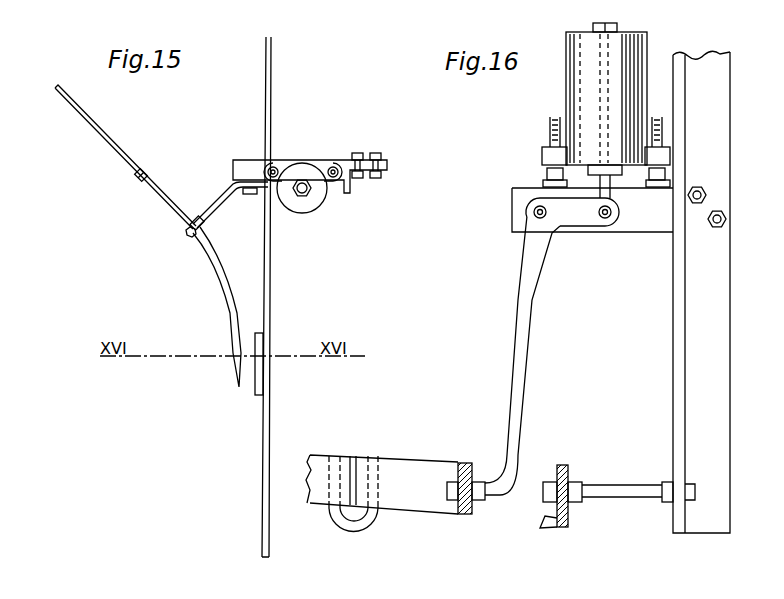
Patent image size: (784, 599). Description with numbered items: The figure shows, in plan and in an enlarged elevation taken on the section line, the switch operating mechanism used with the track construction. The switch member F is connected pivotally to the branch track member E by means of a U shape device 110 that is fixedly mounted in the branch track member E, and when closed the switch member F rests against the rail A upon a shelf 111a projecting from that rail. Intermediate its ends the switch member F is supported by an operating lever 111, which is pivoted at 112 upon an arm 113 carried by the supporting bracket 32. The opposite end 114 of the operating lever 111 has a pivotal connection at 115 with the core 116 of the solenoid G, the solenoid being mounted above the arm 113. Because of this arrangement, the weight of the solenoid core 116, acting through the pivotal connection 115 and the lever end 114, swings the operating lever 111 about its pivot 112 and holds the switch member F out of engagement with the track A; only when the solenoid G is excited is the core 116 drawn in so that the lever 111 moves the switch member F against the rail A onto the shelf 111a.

In FIG. 15, the rail A is at (267, 267).
In FIG. 16, the rail A is at (567, 513).
In FIG. 15, the branch track member E is at (97, 133).
In FIG. 16, the branch track member E is at (320, 462).
In FIG. 15, the switch member F is at (230, 291).
In FIG. 16, the switch member F is at (423, 470).
In FIG. 15, the solenoid G is at (311, 200).
In FIG. 16, the solenoid G is at (582, 85).
In FIG. 15, the supporting bracket 32 is at (364, 181).
In FIG. 16, the supporting bracket 32 is at (697, 395).
In FIG. 15, the U shape device 110 is at (138, 178).
In FIG. 16, the U shape device 110 is at (375, 460).
In FIG. 15, the operating lever 111 is at (217, 211).
In FIG. 16, the operating lever 111 is at (532, 265).
In FIG. 15, the shelf 111a is at (253, 393).
In FIG. 16, the shelf 111a is at (553, 528).
In FIG. 16, the pivot 112 is at (533, 213).
In FIG. 16, the arm 113 is at (627, 217).
In FIG. 16, the opposite end of lever 114 is at (552, 203).
In FIG. 16, the pivotal connection 115 is at (602, 218).
In FIG. 16, the core 116 is at (608, 192).